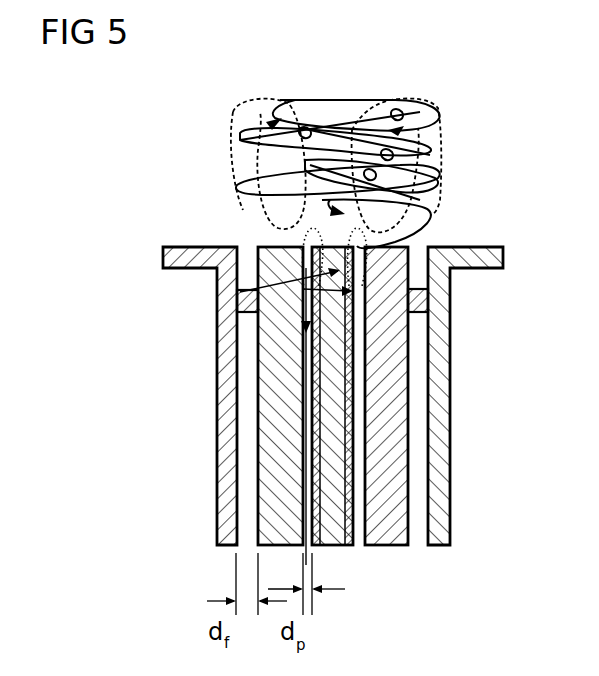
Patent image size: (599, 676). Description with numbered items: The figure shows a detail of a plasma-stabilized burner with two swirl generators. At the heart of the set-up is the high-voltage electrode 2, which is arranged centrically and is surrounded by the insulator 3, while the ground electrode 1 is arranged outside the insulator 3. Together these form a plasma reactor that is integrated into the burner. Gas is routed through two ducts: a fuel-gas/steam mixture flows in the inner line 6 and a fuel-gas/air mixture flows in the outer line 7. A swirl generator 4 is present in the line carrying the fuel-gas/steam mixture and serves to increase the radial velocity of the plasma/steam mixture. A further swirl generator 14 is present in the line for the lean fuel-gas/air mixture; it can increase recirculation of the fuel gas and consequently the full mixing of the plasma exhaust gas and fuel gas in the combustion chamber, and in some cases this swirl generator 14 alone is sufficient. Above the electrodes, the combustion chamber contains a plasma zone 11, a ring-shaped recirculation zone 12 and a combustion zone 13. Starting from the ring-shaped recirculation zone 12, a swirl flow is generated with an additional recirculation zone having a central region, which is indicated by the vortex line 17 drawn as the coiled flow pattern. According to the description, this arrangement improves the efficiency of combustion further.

The ground electrode 1 is at (398, 548).
The high-voltage electrode 2 is at (412, 430).
The insulator 3 is at (353, 413).
The swirl generator 4 is at (357, 326).
The inner gas routing duct 6 is at (357, 351).
The outer gas routing duct 7 is at (418, 500).
The plasma zone 11 is at (302, 240).
The recirculation zone 12 is at (232, 135).
The combustion zone 13 is at (440, 204).
The further swirl generator 14 is at (430, 298).
The vortex line 17 is at (340, 100).